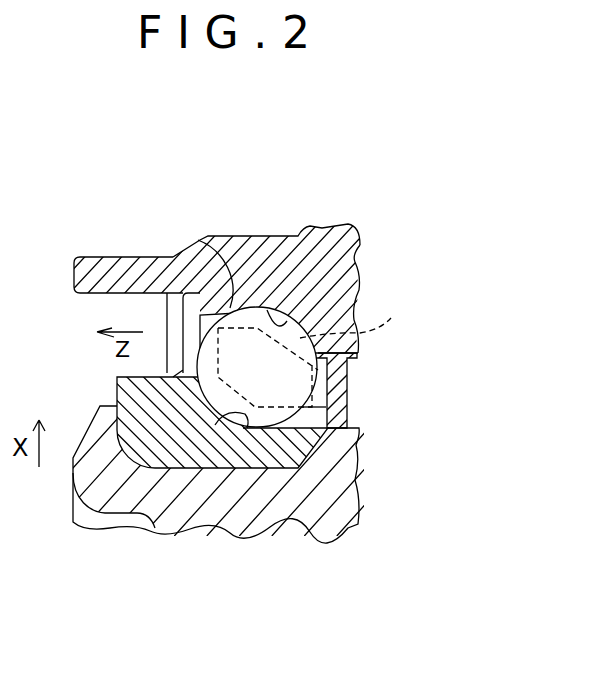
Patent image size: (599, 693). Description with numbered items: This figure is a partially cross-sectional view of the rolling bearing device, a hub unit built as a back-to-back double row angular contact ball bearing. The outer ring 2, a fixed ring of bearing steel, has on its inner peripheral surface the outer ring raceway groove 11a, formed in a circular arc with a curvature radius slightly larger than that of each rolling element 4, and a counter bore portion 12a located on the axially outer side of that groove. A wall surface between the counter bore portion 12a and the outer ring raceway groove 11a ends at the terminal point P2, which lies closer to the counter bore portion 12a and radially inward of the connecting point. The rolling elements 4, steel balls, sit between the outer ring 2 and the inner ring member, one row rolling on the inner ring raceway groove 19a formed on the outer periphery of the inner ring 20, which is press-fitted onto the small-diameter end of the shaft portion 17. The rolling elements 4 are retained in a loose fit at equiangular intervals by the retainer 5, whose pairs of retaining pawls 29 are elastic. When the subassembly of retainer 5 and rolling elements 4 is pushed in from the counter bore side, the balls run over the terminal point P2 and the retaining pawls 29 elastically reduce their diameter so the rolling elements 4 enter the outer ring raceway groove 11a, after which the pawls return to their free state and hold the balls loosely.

The outer ring 2 is at (283, 236).
The terminal point P2 is at (203, 247).
The counter bore portion 12a is at (193, 250).
The outer ring raceway groove 11a is at (345, 268).
The retaining pawls 29 is at (354, 314).
The retainer 5 is at (340, 387).
The rolling elements 4 is at (261, 367).
The inner ring 20 is at (115, 380).
The shaft portion 17 is at (165, 530).
The inner ring raceway groove 19a is at (243, 416).